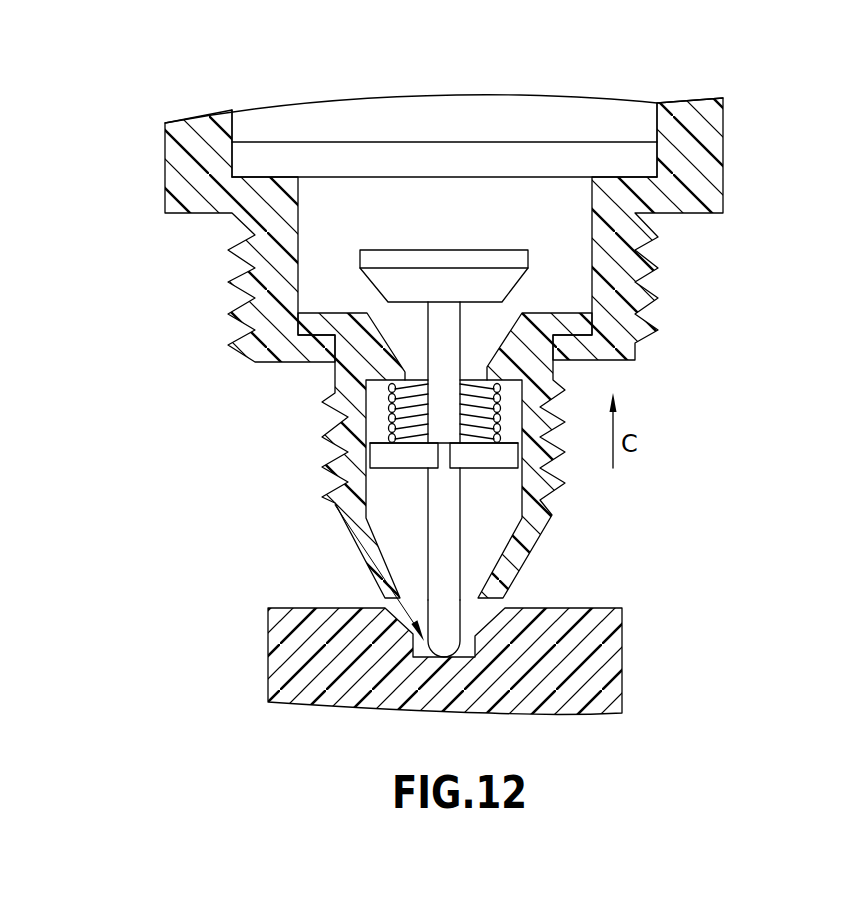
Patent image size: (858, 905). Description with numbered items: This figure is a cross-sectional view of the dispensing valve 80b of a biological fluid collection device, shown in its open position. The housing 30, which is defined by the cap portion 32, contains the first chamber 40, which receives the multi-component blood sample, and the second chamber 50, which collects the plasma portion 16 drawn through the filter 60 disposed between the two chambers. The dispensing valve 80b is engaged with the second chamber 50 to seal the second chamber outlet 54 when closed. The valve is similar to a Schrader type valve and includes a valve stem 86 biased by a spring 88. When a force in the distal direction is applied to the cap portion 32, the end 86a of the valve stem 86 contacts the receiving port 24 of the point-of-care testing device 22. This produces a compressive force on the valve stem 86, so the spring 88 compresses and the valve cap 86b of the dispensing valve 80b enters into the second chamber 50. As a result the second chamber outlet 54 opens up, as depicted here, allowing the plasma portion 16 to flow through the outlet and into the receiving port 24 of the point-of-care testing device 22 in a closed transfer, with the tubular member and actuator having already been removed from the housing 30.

The dispensing valve 80b is at (122, 63).
The first chamber 40 is at (410, 109).
The filter 60 is at (252, 157).
The housing 30 is at (690, 229).
The cap portion 32 is at (707, 152).
The plasma portion 16 is at (428, 218).
The second chamber 50 is at (496, 230).
The valve cap 86b is at (495, 282).
The second chamber outlet 54 is at (470, 370).
The spring 88 is at (403, 407).
The receiving port 24 is at (410, 597).
The valve stem 86 is at (543, 506).
The end of the valve stem 86a is at (493, 681).
The point-of-care testing device 22 is at (282, 655).